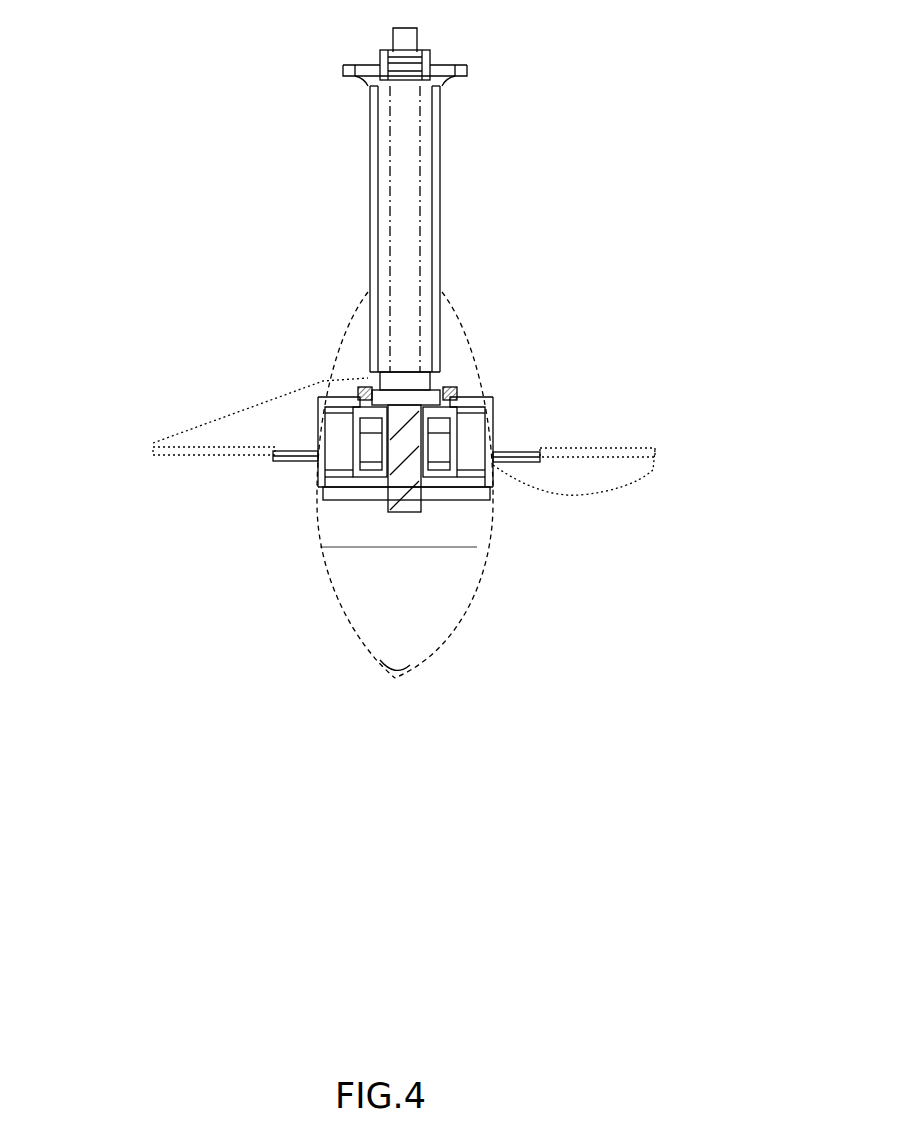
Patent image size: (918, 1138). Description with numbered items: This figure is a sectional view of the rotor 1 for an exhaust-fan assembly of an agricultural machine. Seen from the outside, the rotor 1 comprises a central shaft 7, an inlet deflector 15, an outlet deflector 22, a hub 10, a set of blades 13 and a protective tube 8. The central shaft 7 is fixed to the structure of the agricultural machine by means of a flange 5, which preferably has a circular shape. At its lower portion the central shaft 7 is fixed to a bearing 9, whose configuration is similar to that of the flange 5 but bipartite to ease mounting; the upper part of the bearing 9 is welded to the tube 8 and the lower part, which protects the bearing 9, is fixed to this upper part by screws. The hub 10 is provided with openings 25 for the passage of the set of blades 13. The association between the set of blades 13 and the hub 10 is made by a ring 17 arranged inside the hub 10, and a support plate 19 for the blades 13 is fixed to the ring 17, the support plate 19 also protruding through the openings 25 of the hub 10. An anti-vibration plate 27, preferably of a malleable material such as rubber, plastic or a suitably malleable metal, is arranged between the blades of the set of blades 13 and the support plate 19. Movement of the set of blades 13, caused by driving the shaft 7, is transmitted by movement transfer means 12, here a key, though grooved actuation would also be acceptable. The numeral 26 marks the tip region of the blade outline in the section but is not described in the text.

The rotor 1 is at (571, 71).
The flange 5 is at (446, 68).
The central shaft 7 is at (408, 241).
The protective tube 8 is at (443, 159).
The bearing 9 is at (360, 391).
The hub 10 is at (166, 326).
The movement transfer means 12 is at (374, 430).
The set of blades 13 is at (638, 476).
The inlet deflector 15 is at (440, 612).
The ring 17 is at (352, 438).
The support plate 19 is at (304, 463).
The outlet deflector 22 is at (447, 317).
The openings 25 is at (316, 453).
The blade tip 26 is at (402, 674).
The anti-vibration plate 27 is at (268, 460).